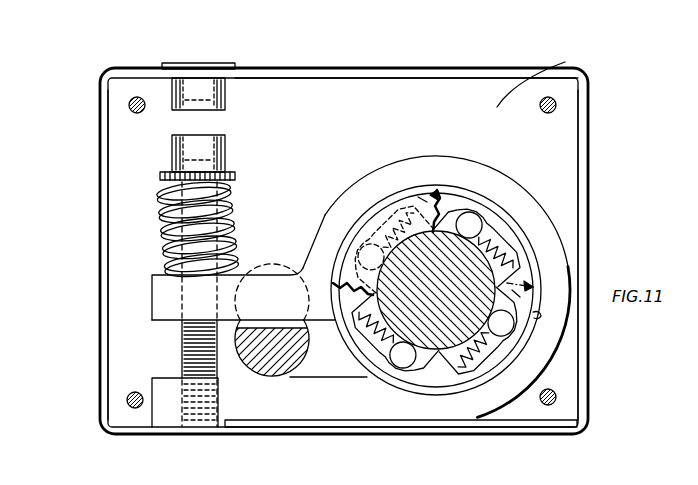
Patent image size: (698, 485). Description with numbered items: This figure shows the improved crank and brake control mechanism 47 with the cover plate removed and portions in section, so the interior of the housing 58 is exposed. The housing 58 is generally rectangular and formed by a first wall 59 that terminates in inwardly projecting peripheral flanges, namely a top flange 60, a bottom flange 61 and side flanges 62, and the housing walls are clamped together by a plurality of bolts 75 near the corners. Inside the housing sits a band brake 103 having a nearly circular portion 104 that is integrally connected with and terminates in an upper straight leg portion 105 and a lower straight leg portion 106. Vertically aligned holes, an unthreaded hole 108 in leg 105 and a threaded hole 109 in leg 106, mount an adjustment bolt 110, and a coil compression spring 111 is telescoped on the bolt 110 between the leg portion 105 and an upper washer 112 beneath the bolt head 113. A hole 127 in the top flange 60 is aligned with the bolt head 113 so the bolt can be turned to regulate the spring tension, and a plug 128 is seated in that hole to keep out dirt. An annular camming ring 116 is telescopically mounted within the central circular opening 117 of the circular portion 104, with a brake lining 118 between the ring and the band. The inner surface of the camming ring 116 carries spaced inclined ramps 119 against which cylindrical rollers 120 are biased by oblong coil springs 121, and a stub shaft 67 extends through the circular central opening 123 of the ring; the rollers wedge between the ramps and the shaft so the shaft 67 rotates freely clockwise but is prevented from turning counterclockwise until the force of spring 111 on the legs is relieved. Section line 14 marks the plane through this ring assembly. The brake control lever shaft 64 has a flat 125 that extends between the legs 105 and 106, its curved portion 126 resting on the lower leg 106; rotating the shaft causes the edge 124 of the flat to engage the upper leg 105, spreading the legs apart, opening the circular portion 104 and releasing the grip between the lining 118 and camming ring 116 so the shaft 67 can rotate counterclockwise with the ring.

The section line 14 is at (488, 231).
The control mechanism 47 is at (445, 57).
The housing 58 is at (590, 137).
The first wall 59 is at (542, 75).
The top flange 60 is at (322, 70).
The bottom flange 61 is at (302, 436).
The side flanges 62 is at (106, 255).
The brake control lever shaft 64 is at (272, 360).
The stub shaft 67 is at (438, 330).
The bolts 75 is at (129, 105).
The band brake 103 is at (543, 205).
The circular portion 104 is at (375, 170).
The upper straight leg portion 105 is at (160, 290).
The lower straight leg portion 106 is at (158, 392).
The unthreaded hole 108 is at (180, 300).
The threaded hole 109 is at (212, 410).
The adjustment bolt 110 is at (188, 340).
The coil compression spring 111 is at (228, 220).
The upper washer 112 is at (236, 178).
The bolt head 113 is at (212, 147).
The camming ring 116 is at (512, 351).
The central circular opening 117 is at (537, 316).
The brake lining 118 is at (535, 248).
The inclined ramps 119 is at (470, 208).
The rollers 120 is at (471, 223).
The coil springs 121 is at (368, 343).
The central opening 123 is at (372, 300).
The edge 124 is at (238, 320).
The flat 125 is at (308, 329).
The curved portion 126 is at (249, 378).
The hole 127 is at (160, 66).
The plug 128 is at (200, 85).